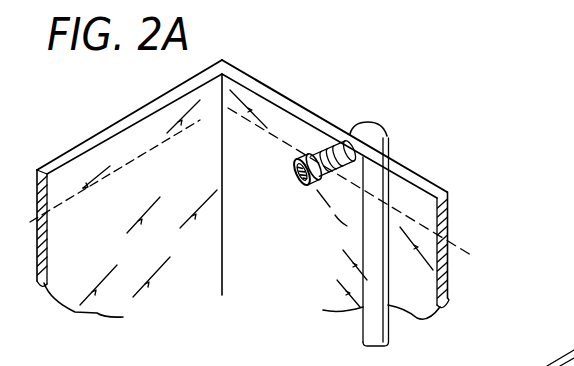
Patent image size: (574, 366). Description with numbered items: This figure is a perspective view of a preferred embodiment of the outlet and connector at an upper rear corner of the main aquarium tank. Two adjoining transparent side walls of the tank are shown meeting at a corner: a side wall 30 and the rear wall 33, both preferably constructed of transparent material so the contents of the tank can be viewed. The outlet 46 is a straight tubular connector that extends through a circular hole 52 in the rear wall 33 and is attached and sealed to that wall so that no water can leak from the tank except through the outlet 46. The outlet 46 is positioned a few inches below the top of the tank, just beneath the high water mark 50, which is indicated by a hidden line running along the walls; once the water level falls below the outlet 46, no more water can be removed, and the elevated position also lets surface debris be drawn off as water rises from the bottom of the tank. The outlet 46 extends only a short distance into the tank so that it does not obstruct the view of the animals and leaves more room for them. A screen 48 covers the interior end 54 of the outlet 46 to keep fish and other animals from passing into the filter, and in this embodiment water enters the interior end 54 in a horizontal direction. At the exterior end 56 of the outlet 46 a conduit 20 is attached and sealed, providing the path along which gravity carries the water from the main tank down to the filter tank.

The conduit 20 is at (389, 136).
The side wall 30 is at (85, 167).
The rear wall 33 is at (433, 220).
The outlet 46 is at (328, 190).
The screen 48 is at (305, 203).
The high water mark 50 is at (472, 256).
The circular hole 52 is at (298, 125).
The interior end 54 is at (280, 170).
The exterior end 56 is at (348, 133).